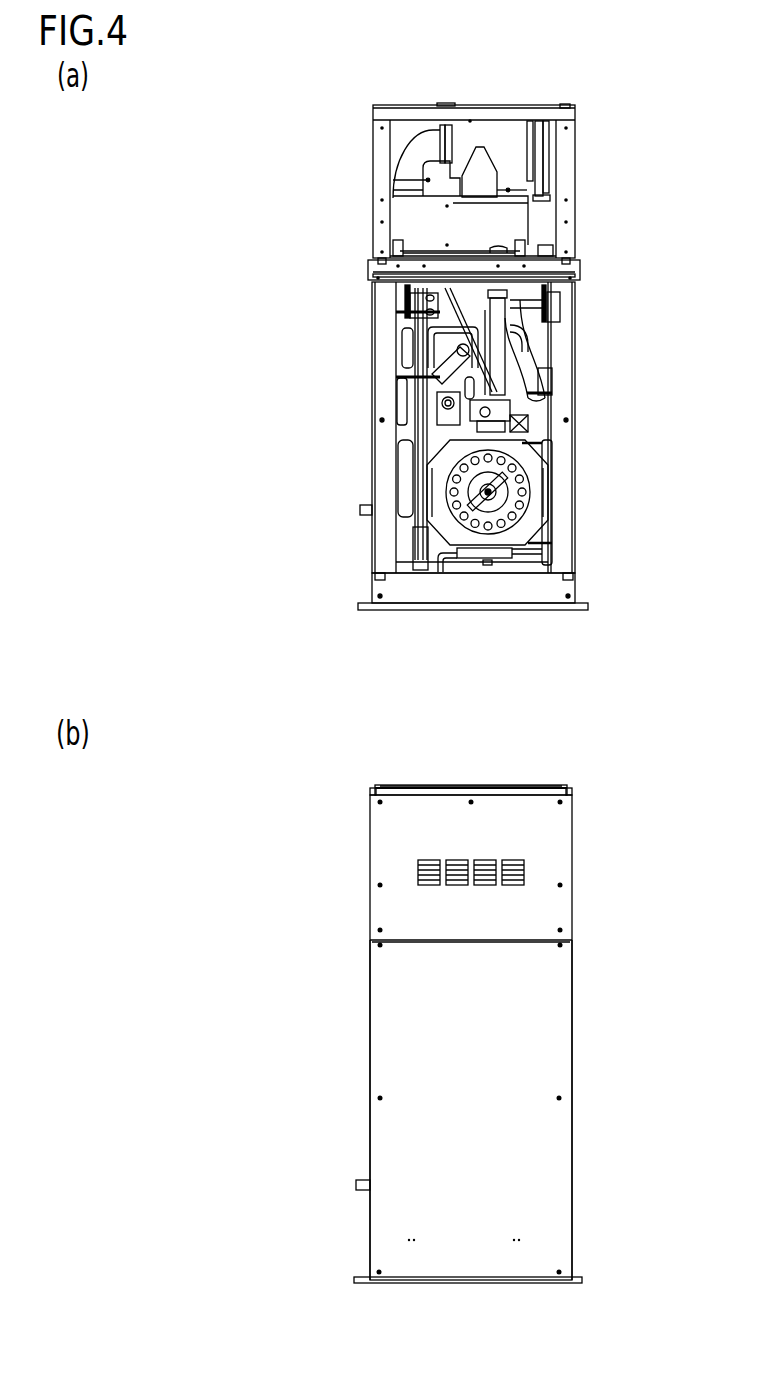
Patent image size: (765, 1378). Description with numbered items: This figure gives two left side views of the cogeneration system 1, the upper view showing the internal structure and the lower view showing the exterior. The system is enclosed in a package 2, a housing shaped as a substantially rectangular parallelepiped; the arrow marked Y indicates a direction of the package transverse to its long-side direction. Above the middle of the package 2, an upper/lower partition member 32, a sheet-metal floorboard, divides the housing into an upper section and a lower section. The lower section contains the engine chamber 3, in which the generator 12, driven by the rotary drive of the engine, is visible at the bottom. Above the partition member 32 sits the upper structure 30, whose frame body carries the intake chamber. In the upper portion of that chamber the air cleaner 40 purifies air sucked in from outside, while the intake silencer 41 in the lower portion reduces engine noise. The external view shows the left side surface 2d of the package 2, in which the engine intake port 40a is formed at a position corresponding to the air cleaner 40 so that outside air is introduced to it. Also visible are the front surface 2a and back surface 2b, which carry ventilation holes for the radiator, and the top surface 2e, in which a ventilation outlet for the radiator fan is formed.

The cogeneration system 1 is at (594, 86).
The upper structure 30 is at (360, 133).
The air cleaner 40 is at (506, 130).
The intake silencer 41 is at (464, 216).
The upper/lower partition member 32 is at (540, 270).
The engine chamber 3 is at (540, 445).
The generator 12 is at (525, 545).
The direction Y is at (527, 647).
The package 2 is at (572, 820).
The top surface 2e is at (513, 784).
The engine intake port 40a is at (525, 868).
The back surface 2b is at (370, 960).
The front surface 2a is at (572, 993).
The left side surface 2d is at (540, 1055).